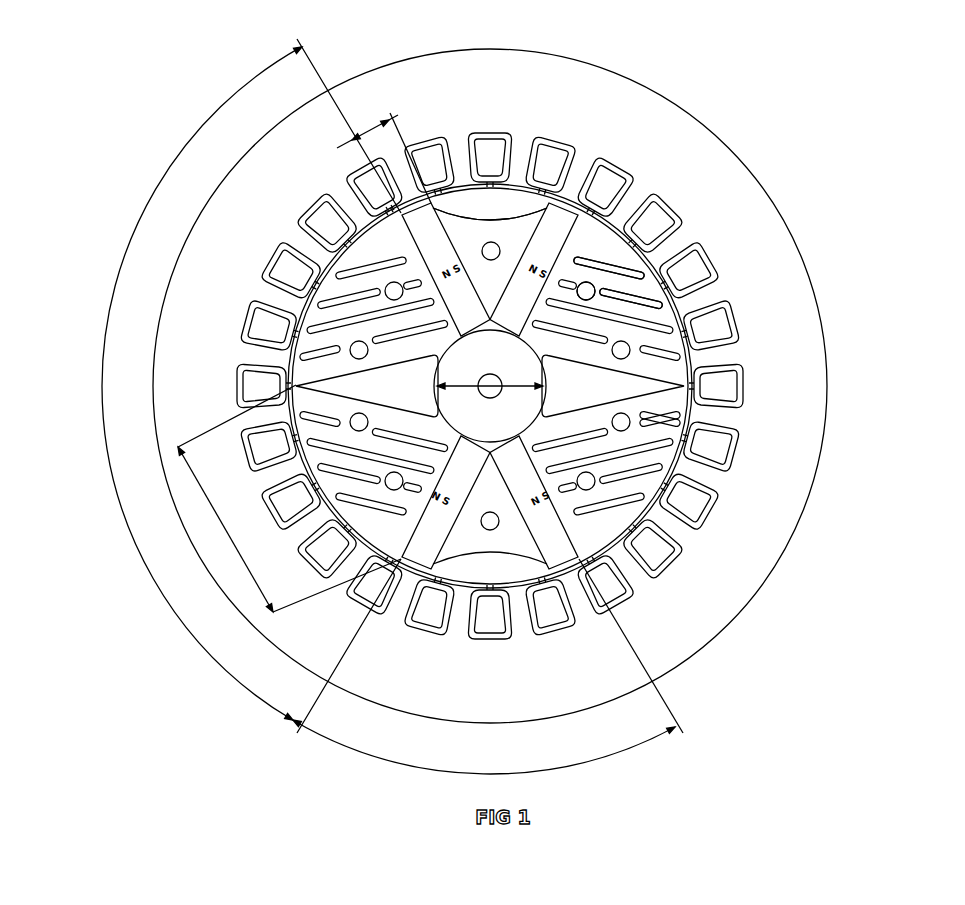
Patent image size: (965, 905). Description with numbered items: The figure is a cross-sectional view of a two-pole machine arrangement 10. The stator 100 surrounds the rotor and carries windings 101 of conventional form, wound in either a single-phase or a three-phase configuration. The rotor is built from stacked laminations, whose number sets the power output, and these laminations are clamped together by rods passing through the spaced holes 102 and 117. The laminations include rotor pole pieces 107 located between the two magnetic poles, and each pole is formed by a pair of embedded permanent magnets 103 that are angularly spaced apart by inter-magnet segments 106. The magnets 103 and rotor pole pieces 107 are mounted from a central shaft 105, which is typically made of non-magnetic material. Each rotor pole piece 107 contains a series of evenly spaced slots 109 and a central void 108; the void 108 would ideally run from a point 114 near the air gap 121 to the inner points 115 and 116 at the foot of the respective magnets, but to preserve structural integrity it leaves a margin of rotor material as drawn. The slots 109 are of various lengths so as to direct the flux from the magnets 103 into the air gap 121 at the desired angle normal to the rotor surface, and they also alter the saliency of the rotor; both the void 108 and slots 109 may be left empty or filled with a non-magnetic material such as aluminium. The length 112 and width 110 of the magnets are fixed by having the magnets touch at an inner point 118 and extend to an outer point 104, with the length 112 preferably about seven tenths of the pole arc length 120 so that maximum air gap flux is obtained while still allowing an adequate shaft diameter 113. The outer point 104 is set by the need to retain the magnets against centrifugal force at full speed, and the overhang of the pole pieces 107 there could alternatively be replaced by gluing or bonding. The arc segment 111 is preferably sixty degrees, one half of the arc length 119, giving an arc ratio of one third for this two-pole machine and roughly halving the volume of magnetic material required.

The machine arrangement 10 is at (469, 377).
The stator 100 is at (537, 105).
The windings 101 is at (556, 162).
The spaced holes 102 is at (646, 283).
The permanent magnets 103 is at (552, 253).
The outer point 104 is at (397, 213).
The central shaft 105 is at (510, 407).
The inter-magnet segments 106 is at (488, 498).
The rotor pole pieces 107 is at (636, 316).
The central void 108 is at (666, 385).
The slots 109 is at (672, 424).
The width of the magnets 110 is at (384, 156).
The arc segment 111 is at (488, 666).
The length of the magnets 112 is at (479, 244).
The shaft diameter 113 is at (490, 376).
The point near the air gap 114 is at (698, 392).
The inner point 115 is at (566, 489).
The inner point 116 is at (643, 300).
The spaced holes 117 is at (496, 249).
The inner point 118 is at (589, 292).
The arc length 119 is at (234, 386).
The pole arc length 120 is at (289, 498).
The air gap 121 is at (709, 343).